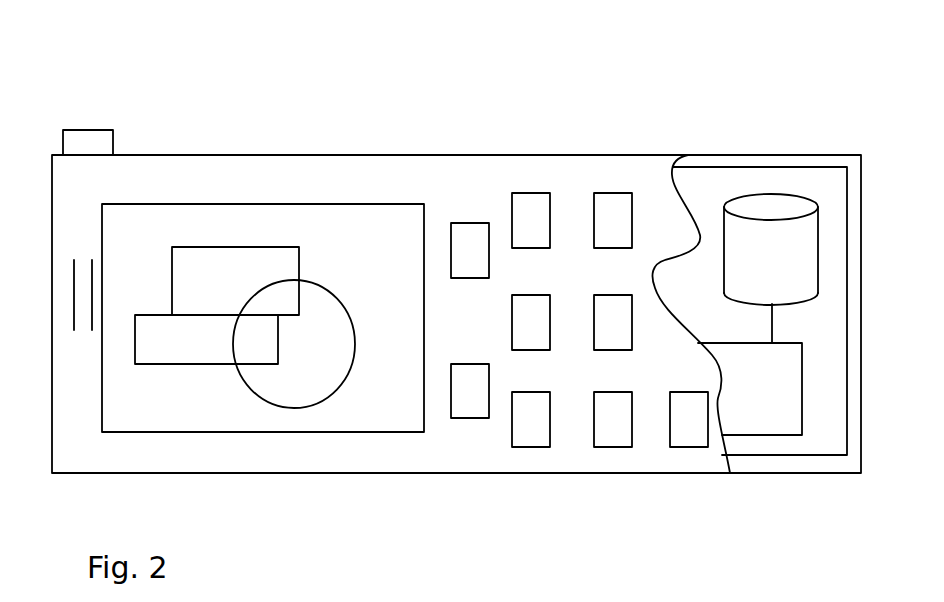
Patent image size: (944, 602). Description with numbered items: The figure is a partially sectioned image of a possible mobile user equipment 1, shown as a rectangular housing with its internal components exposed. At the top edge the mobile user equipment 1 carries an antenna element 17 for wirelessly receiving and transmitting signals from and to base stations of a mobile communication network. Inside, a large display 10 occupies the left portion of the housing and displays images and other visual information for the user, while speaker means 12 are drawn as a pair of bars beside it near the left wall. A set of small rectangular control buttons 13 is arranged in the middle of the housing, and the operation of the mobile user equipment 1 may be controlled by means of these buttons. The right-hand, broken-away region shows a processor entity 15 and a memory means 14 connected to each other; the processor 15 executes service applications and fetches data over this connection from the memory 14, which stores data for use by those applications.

The mobile user equipment 1 is at (202, 175).
The display 10 is at (322, 223).
The speaker means 12 is at (80, 310).
The control buttons 13 is at (467, 242).
The memory means 14 is at (783, 228).
The processor entity 15 is at (735, 352).
The antenna element 17 is at (88, 145).